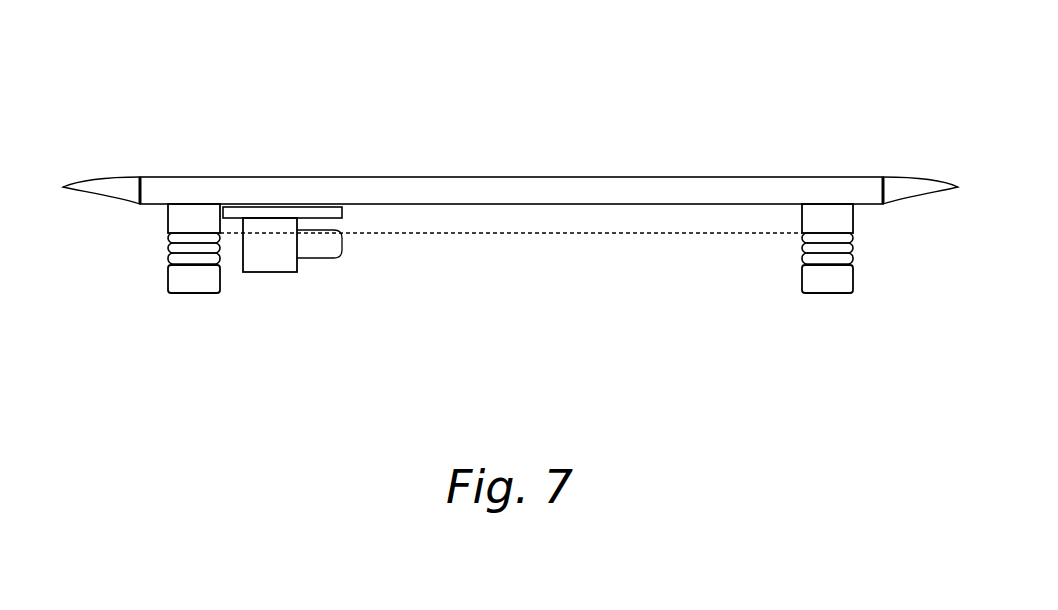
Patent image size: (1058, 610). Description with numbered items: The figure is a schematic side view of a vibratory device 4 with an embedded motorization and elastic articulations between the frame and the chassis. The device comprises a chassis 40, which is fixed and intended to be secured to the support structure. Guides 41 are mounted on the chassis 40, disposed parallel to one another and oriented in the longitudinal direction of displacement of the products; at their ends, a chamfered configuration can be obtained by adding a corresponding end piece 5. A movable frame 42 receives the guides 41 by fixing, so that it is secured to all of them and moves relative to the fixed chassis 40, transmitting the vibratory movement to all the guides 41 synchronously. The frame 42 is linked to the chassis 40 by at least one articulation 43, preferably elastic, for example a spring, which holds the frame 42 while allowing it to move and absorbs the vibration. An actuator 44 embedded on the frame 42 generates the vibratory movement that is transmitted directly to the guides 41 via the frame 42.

The vibratory device 4 is at (152, 310).
The end piece 5 is at (907, 186).
The chassis 40 is at (828, 279).
The guides 41 is at (633, 188).
The movable frame 42 is at (830, 221).
The articulation 43 is at (860, 248).
The actuator 44 is at (268, 252).